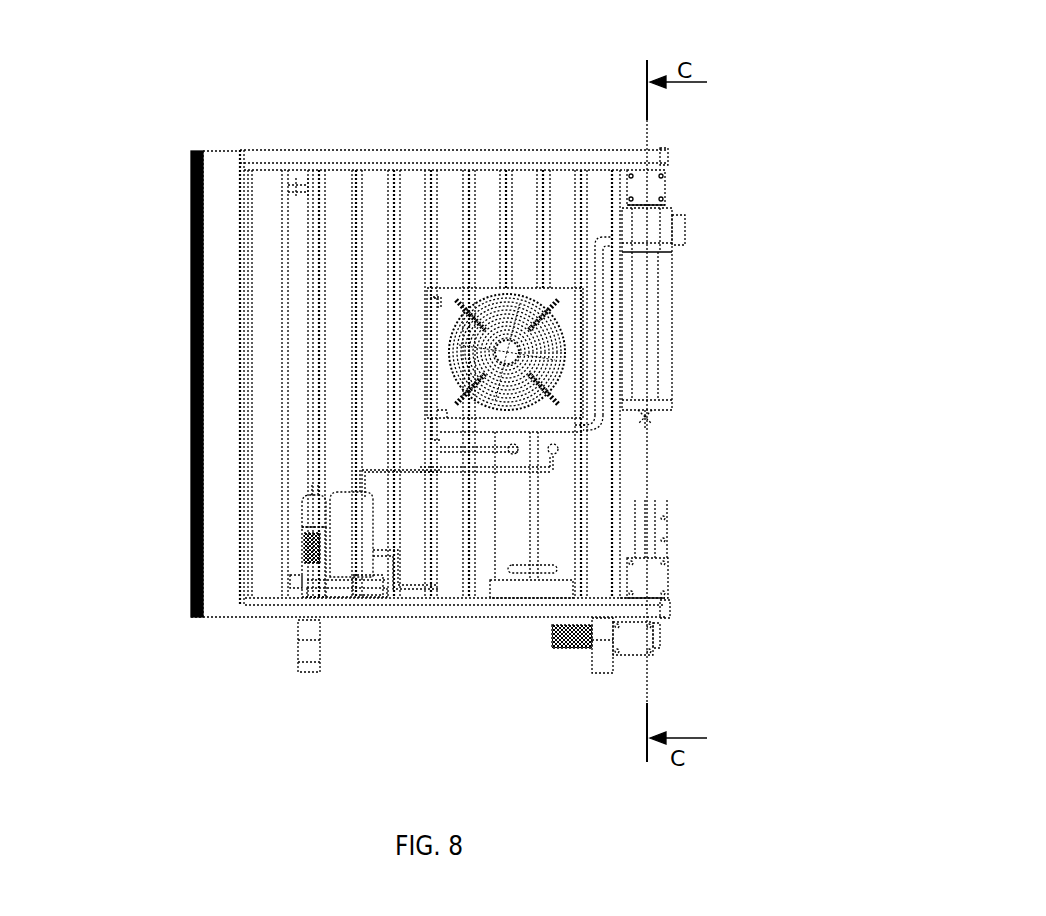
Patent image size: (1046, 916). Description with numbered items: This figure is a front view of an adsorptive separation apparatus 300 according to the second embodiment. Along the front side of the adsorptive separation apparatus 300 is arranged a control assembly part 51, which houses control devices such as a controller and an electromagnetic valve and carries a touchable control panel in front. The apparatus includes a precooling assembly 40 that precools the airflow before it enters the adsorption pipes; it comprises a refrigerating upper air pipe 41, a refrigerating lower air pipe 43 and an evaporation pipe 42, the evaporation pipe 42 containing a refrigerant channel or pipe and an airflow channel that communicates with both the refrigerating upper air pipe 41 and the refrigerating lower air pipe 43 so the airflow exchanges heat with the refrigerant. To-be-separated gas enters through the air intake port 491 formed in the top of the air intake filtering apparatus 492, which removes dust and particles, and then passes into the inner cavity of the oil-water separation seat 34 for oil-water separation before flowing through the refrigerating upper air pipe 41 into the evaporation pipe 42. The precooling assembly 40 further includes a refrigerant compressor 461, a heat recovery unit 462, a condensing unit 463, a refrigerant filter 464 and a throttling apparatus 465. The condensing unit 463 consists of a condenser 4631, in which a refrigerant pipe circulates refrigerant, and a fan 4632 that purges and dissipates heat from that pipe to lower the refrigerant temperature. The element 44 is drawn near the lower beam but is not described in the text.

The adsorptive separation apparatus 300 is at (154, 43).
The oil-water separation seat 34 is at (668, 186).
The precooling assembly 40 is at (274, 601).
The refrigerating upper air pipe 41 is at (668, 152).
The evaporation pipe 42 is at (265, 353).
The refrigerating lower air pipe 43 is at (668, 605).
The motor 44 is at (662, 633).
The control assembly part 51 is at (228, 472).
The refrigerant compressor 461 is at (353, 565).
The heat recovery unit 462 is at (553, 518).
The condensing unit 463 is at (847, 358).
The condenser 4631 is at (560, 358).
The fan 4632 is at (560, 397).
The refrigerant filter 464 is at (382, 598).
The throttling apparatus 465 is at (292, 598).
The air intake port 491 is at (685, 223).
The air intake filtering apparatus 492 is at (672, 285).